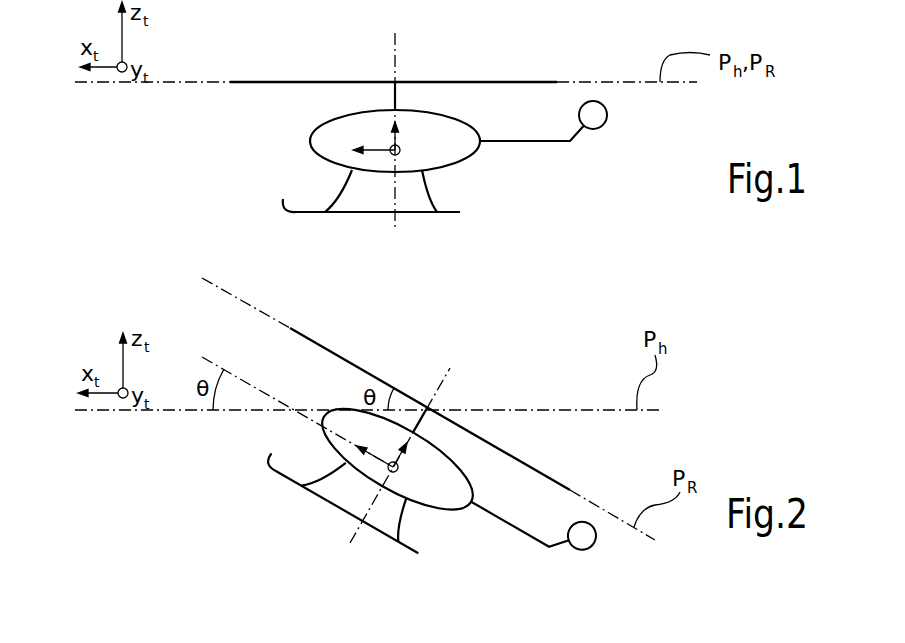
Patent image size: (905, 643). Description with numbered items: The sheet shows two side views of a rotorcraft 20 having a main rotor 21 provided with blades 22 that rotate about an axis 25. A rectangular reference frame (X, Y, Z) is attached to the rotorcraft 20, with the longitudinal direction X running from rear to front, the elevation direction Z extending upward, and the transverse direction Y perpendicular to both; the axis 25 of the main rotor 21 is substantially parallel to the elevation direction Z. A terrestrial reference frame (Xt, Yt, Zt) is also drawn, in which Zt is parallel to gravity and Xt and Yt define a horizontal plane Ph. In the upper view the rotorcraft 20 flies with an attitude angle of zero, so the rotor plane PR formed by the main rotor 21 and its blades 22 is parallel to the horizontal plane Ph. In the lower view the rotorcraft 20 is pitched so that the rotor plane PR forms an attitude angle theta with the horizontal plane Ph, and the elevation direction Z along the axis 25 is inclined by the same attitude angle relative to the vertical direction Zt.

In FIG. 1, the rotorcraft 20 is at (515, 194).
In FIG. 2, the rotorcraft 20 is at (490, 569).
In FIG. 1, the main rotor 21 is at (238, 105).
In FIG. 2, the main rotor 21 is at (240, 271).
In FIG. 1, the blades 22 is at (278, 82).
In FIG. 2, the blades 22 is at (353, 364).
In FIG. 1, the axis 25 is at (395, 45).
In FIG. 2, the axis 25 is at (445, 378).